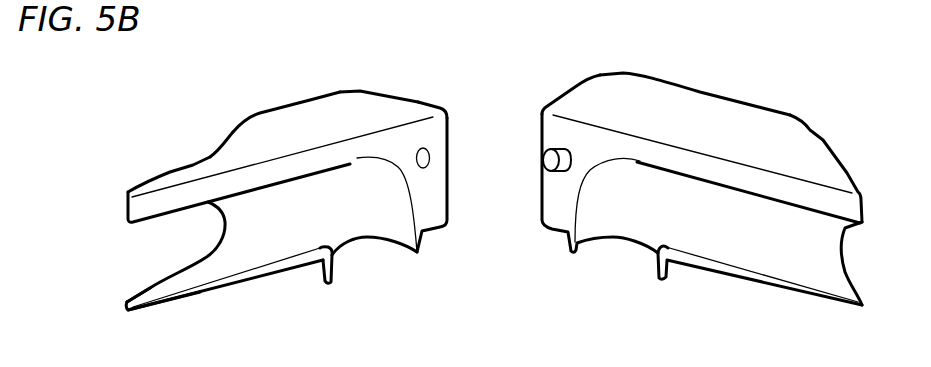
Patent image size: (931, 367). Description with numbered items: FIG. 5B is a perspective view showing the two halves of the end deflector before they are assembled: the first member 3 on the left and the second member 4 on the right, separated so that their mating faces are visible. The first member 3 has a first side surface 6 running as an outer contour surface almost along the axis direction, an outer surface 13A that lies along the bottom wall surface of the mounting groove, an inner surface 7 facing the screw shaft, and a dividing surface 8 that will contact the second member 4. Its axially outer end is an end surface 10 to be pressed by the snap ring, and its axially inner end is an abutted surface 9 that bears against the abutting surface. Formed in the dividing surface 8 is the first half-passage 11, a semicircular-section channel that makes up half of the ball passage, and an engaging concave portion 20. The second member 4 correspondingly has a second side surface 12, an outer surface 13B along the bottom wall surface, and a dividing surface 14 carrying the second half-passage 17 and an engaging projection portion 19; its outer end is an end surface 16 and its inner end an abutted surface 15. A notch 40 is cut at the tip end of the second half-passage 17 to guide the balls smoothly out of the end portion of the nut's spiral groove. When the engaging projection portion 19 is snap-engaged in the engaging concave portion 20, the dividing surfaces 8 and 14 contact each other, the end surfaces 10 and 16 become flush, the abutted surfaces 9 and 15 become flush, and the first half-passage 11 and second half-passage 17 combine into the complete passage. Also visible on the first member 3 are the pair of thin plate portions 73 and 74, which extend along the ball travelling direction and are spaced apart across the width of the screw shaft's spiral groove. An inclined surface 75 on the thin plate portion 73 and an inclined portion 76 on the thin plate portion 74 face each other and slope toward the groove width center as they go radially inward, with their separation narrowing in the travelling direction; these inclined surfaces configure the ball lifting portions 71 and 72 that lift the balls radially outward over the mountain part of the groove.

The first member 3 is at (231, 128).
The second member 4 is at (742, 79).
The first side surface 6 is at (297, 106).
The inner surface 7 is at (165, 177).
The thin plate portion 73 is at (184, 197).
The end surface 10 is at (380, 107).
The outer surface 13A is at (418, 103).
The dividing surface 8 is at (435, 127).
The engaging concave portion 20 is at (428, 166).
The abutted surface 9 is at (432, 228).
The first half-passage 11 is at (290, 234).
The inclined surface 75 is at (171, 214).
The ball lifting portion 71 is at (162, 271).
The inclined portion 76 is at (158, 287).
The ball lifting portion 72 is at (168, 319).
The thin plate portion 74 is at (182, 292).
The outer surface 13B is at (582, 85).
The dividing surface 14 is at (590, 143).
The engaging projection portion 19 is at (543, 157).
The second side surface 12 is at (685, 86).
The end surface 16 is at (782, 128).
The notch 40 is at (845, 250).
The abutted surface 15 is at (718, 273).
The second half-passage 17 is at (787, 247).